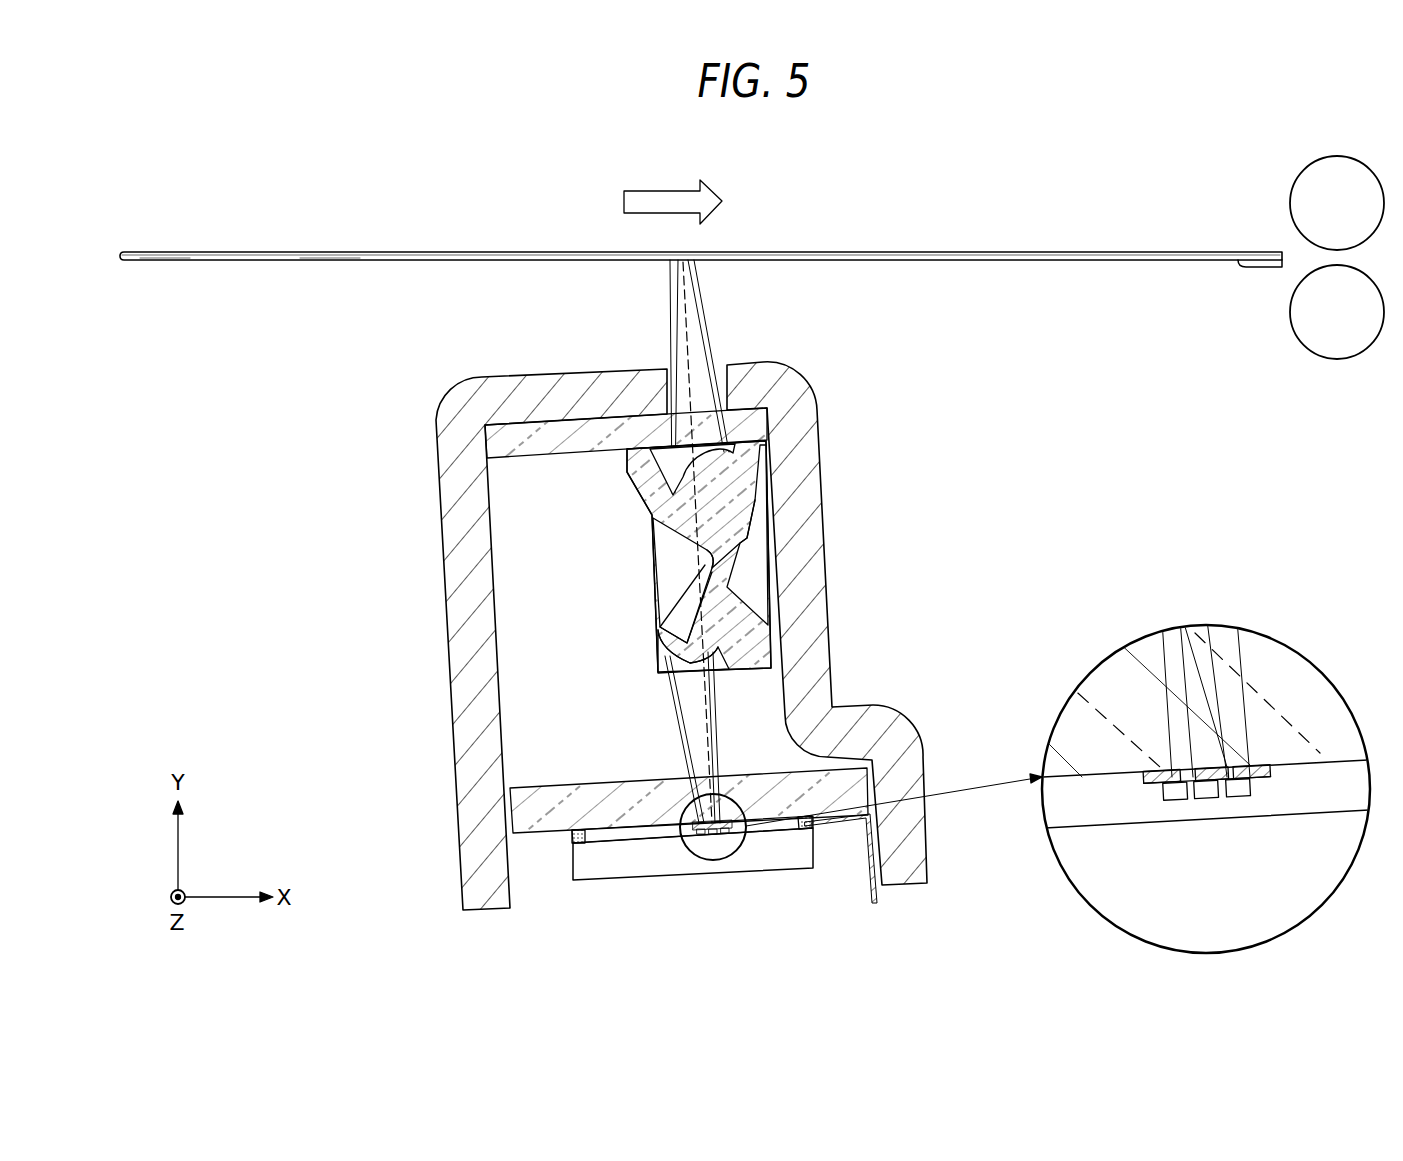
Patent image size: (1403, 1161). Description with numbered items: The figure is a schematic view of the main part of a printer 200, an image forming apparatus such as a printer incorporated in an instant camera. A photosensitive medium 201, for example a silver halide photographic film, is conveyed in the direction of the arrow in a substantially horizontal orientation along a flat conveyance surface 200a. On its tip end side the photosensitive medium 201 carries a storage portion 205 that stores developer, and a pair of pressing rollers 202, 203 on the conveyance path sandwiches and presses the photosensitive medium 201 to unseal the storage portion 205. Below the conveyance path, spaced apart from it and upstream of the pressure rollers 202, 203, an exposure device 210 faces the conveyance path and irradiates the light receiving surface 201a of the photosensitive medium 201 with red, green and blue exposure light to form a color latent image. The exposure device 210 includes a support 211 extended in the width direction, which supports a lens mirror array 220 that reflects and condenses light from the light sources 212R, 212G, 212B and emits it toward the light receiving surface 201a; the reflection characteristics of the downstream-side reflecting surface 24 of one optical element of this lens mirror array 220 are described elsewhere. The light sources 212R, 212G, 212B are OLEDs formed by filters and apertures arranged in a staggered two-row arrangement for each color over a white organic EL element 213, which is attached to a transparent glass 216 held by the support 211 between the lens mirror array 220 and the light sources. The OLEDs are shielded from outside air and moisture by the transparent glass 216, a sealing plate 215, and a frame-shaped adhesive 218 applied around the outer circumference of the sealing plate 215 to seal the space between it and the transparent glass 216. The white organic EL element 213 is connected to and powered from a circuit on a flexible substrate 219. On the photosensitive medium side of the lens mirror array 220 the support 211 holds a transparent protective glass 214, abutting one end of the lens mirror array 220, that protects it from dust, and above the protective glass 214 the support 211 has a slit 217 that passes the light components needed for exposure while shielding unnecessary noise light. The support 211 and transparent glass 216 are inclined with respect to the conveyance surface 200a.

The printer 200 is at (752, 270).
The photosensitive medium 201 is at (218, 251).
The light receiving surface 201a is at (163, 262).
The conveyance surface 200a is at (328, 262).
The pressing roller 202 is at (1290, 198).
The pressing roller 203 is at (1336, 359).
The storage portion 205 is at (1262, 268).
The exposure device 210 is at (739, 612).
The support 211 is at (818, 578).
The protective glass 214 is at (551, 453).
The sealing plate 215 is at (578, 869).
The transparent glass 216 is at (575, 793).
The slit 217 is at (720, 372).
The adhesive 218 is at (812, 824).
The flexible substrate 219 is at (876, 905).
The lens mirror array 220 is at (752, 495).
The downstream-side reflecting surface 24 is at (735, 572).
The red light source 212R is at (1170, 813).
The green light source 212G is at (1203, 786).
The blue light source 212B is at (1257, 800).
The white organic EL element 213 is at (712, 827).